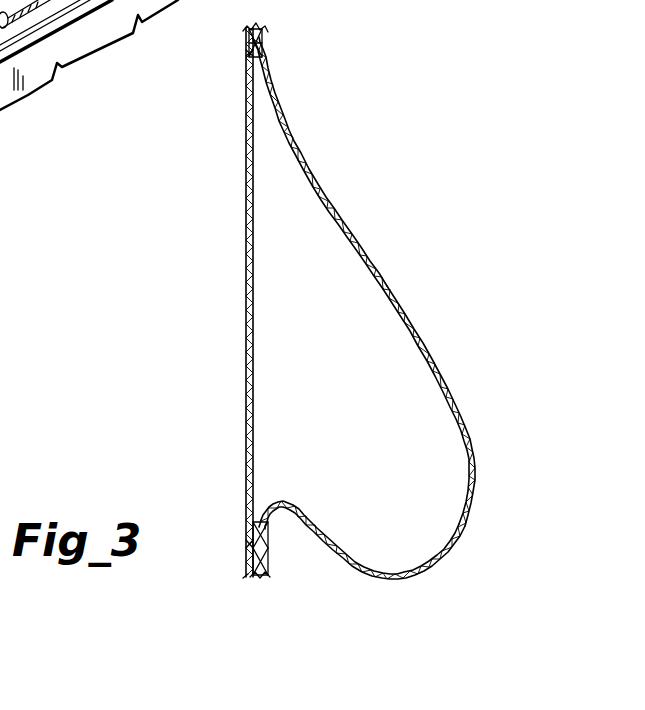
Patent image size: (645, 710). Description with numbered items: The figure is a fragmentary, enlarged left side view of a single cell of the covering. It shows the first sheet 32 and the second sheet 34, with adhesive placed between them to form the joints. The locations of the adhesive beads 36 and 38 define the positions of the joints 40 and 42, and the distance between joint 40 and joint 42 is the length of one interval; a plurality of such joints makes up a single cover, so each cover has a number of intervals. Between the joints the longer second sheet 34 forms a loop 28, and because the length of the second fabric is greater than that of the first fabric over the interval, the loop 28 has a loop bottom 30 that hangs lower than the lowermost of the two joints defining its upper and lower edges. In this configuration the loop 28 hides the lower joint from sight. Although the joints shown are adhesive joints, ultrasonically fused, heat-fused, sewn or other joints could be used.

The loop 28 is at (376, 320).
The loop bottom 30 is at (420, 572).
The first sheet 32 is at (247, 266).
The second sheet 34 is at (462, 420).
The adhesive bead 36 is at (243, 50).
The adhesive bead 38 is at (267, 547).
The joint 40 is at (243, 53).
The joint 42 is at (247, 545).